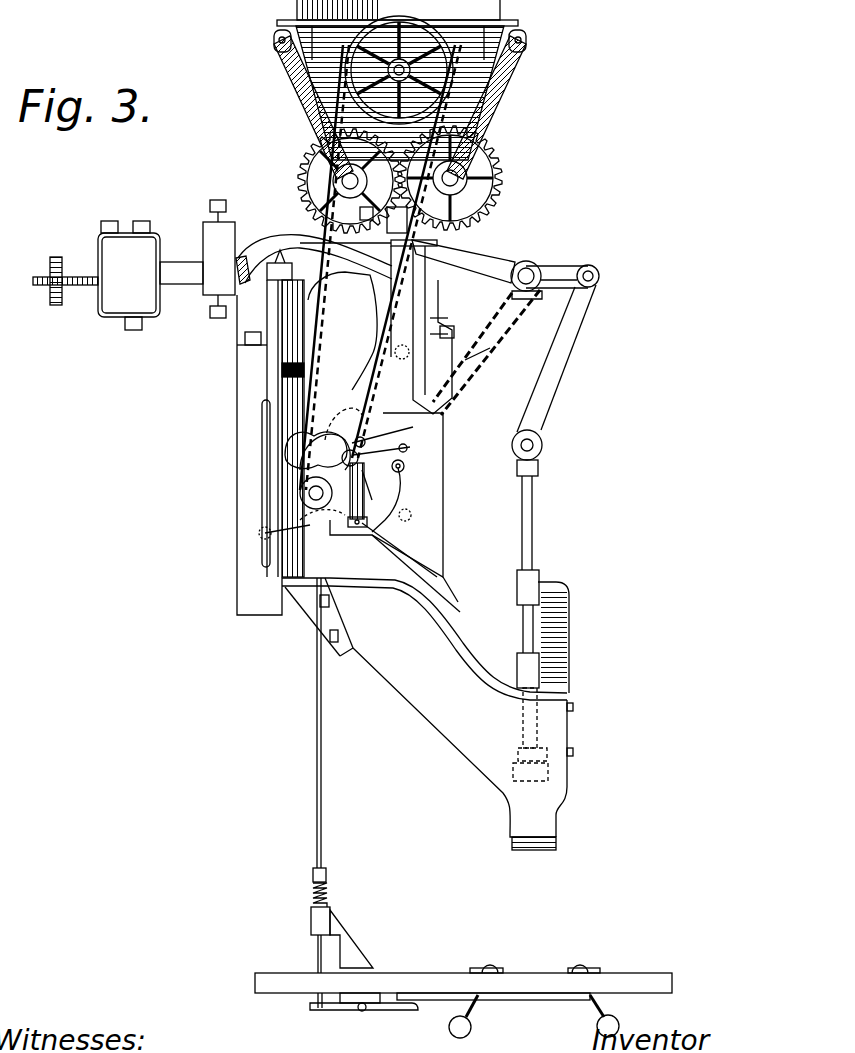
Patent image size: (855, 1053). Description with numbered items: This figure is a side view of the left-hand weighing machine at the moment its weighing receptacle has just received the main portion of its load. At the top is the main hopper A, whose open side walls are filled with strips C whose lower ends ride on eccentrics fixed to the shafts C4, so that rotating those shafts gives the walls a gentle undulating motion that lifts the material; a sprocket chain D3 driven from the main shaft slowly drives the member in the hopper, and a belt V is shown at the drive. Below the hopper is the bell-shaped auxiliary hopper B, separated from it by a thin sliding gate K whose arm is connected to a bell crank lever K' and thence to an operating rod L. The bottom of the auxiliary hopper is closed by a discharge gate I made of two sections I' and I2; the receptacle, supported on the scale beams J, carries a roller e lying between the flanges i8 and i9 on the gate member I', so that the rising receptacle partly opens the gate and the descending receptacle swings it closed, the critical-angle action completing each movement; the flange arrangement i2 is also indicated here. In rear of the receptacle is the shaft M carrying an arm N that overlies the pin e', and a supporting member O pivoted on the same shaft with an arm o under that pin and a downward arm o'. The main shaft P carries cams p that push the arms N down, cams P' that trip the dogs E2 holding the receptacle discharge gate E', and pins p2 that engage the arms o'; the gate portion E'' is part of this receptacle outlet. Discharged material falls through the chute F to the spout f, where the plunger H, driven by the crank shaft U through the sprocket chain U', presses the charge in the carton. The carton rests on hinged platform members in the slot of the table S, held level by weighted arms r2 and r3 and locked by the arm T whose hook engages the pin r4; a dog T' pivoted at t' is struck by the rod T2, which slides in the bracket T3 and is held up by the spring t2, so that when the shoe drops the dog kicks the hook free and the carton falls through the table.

The hopper A is at (515, 7).
The strips C is at (284, 58).
The sprocket chain D3 is at (470, 108).
The shafts C4 is at (305, 135).
The pulley and belt V is at (333, 168).
The gate K is at (325, 181).
The bell crank lever K' is at (331, 381).
The scale beams J is at (183, 262).
The auxiliary hoppers B is at (462, 244).
The crank shaft U is at (555, 256).
The sprocket chain U' is at (566, 358).
The operating rod L is at (312, 305).
The gate section I2 is at (354, 388).
The dogs E2 is at (352, 385).
The guide i2 is at (432, 310).
The rollers e is at (424, 322).
The upper flange i8 is at (460, 330).
The lower flange i9 is at (488, 368).
The gate section I' is at (477, 660).
The shaft M is at (298, 462).
The main shaft P is at (256, 495).
The arms N is at (412, 440).
The pin e' is at (436, 451).
The arm o is at (408, 462).
The supporting members O is at (372, 485).
The arm o' is at (399, 500).
The cams P' is at (286, 532).
The pins p2 is at (328, 522).
The cams p is at (355, 530).
The plate E'' is at (414, 512).
The discharge gates E' is at (467, 571).
The plunger H is at (540, 541).
The chutes F is at (428, 703).
The spouts f is at (560, 830).
The rod T2 is at (314, 738).
The spring t2 is at (304, 892).
The bracket T3 is at (340, 920).
The table S is at (263, 975).
The discharge gate I is at (585, 948).
The hinged dog T' is at (362, 1017).
The pivot t' is at (359, 1022).
The arm T is at (493, 1013).
The weighted arm r2 is at (482, 1020).
The weighted arm r3 is at (452, 1020).
The pin r4 is at (618, 1016).